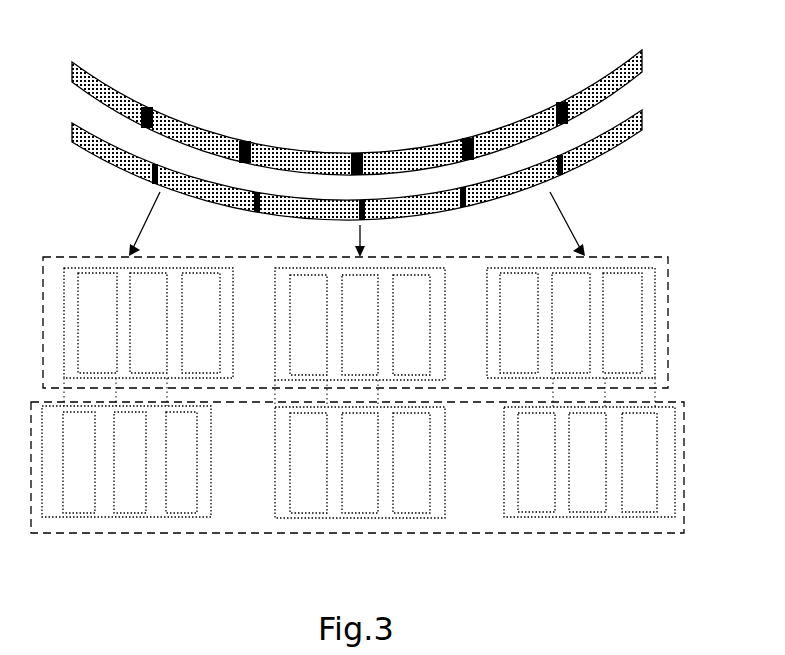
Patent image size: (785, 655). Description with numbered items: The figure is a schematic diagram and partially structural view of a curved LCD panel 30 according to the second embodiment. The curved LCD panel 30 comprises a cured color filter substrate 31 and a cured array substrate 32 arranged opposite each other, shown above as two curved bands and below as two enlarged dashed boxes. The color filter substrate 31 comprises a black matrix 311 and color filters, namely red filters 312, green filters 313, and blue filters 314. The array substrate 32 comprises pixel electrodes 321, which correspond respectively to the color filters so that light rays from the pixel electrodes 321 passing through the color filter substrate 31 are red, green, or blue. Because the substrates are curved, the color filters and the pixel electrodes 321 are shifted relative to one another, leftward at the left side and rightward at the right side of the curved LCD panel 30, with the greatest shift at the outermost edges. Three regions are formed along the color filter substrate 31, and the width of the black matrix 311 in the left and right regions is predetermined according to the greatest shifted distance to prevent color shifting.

The curved LCD panel 30 is at (84, 52).
The color filter substrate 31 is at (643, 60).
The array substrate 32 is at (643, 127).
The black matrix 311 is at (662, 478).
The red filters 312 is at (67, 503).
The green filters 313 is at (127, 503).
The blue filters 314 is at (179, 503).
The pixel electrodes 321 is at (646, 337).